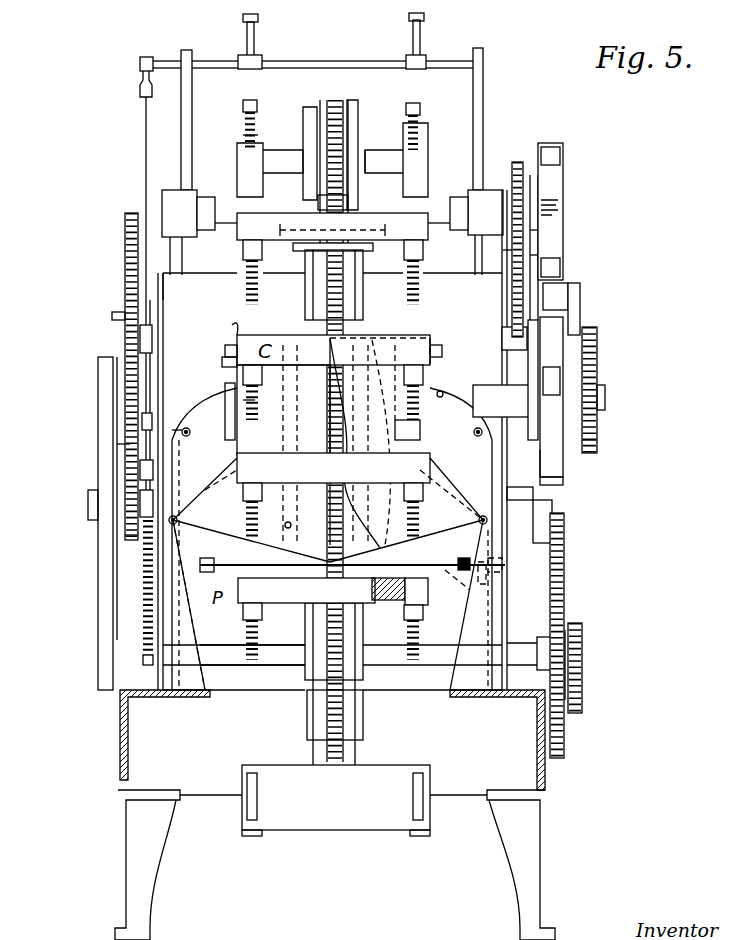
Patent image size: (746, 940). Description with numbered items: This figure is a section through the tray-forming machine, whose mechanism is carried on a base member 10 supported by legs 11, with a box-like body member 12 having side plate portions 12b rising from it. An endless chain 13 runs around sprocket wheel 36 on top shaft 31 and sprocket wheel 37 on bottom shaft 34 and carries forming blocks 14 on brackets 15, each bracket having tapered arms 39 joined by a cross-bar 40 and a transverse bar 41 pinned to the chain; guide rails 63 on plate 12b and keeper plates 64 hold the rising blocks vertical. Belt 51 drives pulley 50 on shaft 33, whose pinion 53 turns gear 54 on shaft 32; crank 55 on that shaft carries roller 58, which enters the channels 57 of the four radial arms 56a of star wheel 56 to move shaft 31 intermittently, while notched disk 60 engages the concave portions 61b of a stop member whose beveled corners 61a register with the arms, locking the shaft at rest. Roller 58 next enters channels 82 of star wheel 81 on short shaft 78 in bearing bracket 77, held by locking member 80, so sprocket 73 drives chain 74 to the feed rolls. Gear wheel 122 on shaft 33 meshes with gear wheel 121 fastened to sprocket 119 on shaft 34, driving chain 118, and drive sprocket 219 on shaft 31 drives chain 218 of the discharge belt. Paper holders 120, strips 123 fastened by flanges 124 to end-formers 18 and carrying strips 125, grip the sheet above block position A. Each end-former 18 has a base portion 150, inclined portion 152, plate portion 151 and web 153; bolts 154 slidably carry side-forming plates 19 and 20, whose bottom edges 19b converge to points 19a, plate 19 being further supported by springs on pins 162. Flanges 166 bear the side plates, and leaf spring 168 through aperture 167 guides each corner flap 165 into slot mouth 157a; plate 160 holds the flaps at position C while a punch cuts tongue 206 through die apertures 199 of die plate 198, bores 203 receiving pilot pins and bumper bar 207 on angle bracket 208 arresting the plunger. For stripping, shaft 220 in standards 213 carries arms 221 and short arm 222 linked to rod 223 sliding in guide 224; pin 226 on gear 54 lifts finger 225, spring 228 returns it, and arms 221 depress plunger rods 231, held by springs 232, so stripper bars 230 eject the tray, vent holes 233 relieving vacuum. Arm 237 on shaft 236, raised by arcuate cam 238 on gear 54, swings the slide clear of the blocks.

The base member 10 is at (122, 745).
The legs 11 is at (120, 838).
The body member 12 is at (150, 292).
The side plate portions 12b is at (184, 290).
The endless chain 13 is at (331, 135).
The forming block 14 is at (435, 136).
The bracket 15 is at (363, 290).
The end-former 18 is at (217, 698).
The side-forming plate 19 is at (283, 410).
The points 19a is at (295, 548).
The bottom edges 19b is at (328, 539).
The side-forming plate 20 is at (370, 441).
The top shaft 31 is at (437, 208).
The shaft 32 is at (510, 334).
The shaft 33 is at (520, 490).
The bottom shaft 34 is at (268, 655).
The sprocket wheel 36 is at (356, 204).
The sprocket wheel 37 is at (362, 690).
The tapered arms 39 is at (357, 112).
The cross-bar 40 is at (377, 148).
The transverse bar 41 is at (306, 135).
The pulley 50 is at (88, 502).
The belt 51 is at (106, 658).
The pinion 53 is at (127, 540).
The gear wheel 54 is at (125, 230).
The arm or crank 55 is at (580, 310).
The star wheel 56 is at (572, 175).
The radial arms 56a is at (550, 185).
The channel 57 is at (553, 155).
The roller 58 is at (560, 290).
The disk 60 is at (532, 255).
The corners 61a is at (537, 180).
The perimeter portions 61b is at (538, 206).
The guide rails 63 is at (290, 335).
The keeper plates 64 is at (393, 337).
The sprocket 73 is at (598, 375).
The chain 74 is at (592, 442).
The bearing bracket 77 is at (501, 401).
The short shaft 78 is at (575, 412).
The locking member 80 is at (531, 424).
The star wheel 81 is at (556, 458).
The channels 82 is at (602, 484).
The chain 118 is at (581, 672).
The sprocket 119 is at (584, 640).
The paper holders 120 is at (222, 552).
The gear wheel 121 is at (556, 640).
The gear wheel 122 is at (546, 508).
The strip 123 is at (455, 583).
The flanges 124 is at (485, 573).
The strip 125 is at (462, 560).
The base portion 150 is at (186, 690).
The plate portion 151 is at (250, 409).
The inclined portion 152 is at (451, 499).
The web 153 is at (465, 386).
The bolts 154 is at (510, 536).
The slot mouth 157a is at (214, 467).
The plate 160 is at (236, 332).
The pins 162 is at (360, 443).
The corner flaps 165 is at (238, 470).
The vertical flanges 166 is at (232, 438).
The aperture 167 is at (455, 397).
The leaf spring 168 is at (426, 432).
The die plate 198 is at (245, 165).
The die apertures 199 is at (426, 605).
The bores 203 is at (400, 632).
The paper tongue 206 is at (383, 563).
The bumper bar 207 is at (230, 357).
The angle bracket 208 is at (232, 364).
The standards 213 is at (188, 86).
The chain 218 is at (512, 254).
The drive sprocket 219 is at (513, 170).
The shaft 220 is at (213, 60).
The arms 221 is at (412, 38).
The short arm 222 is at (140, 64).
The rod 223 is at (146, 118).
The guide 224 is at (140, 470).
The finger 225 is at (142, 422).
The pin 226 is at (173, 436).
The compression spring 228 is at (146, 620).
The stripper bars 230 is at (402, 600).
The plunger rods 231 is at (247, 115).
The compression springs 232 is at (247, 140).
The holes 233 is at (370, 602).
The shaft 236 is at (145, 312).
The arm 237 is at (140, 334).
The arcuate cam 238 is at (122, 448).